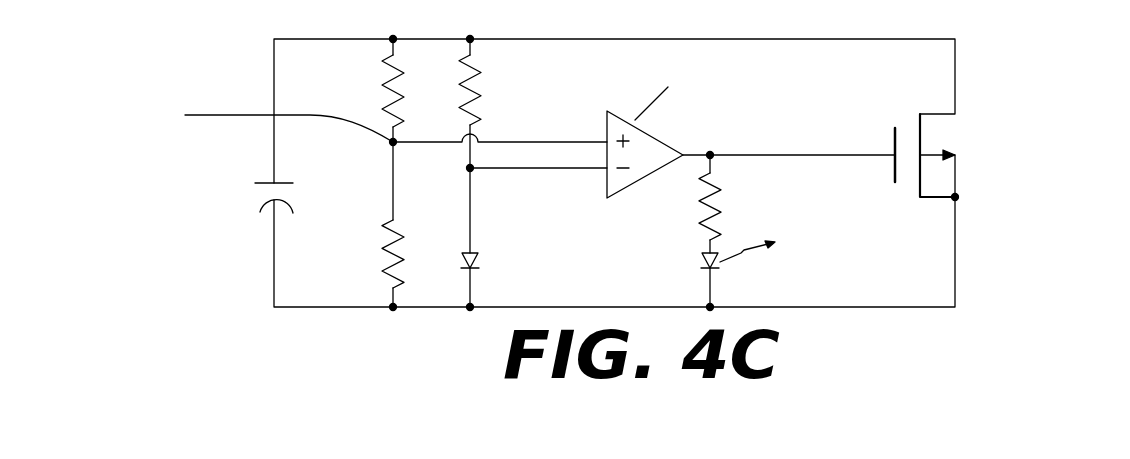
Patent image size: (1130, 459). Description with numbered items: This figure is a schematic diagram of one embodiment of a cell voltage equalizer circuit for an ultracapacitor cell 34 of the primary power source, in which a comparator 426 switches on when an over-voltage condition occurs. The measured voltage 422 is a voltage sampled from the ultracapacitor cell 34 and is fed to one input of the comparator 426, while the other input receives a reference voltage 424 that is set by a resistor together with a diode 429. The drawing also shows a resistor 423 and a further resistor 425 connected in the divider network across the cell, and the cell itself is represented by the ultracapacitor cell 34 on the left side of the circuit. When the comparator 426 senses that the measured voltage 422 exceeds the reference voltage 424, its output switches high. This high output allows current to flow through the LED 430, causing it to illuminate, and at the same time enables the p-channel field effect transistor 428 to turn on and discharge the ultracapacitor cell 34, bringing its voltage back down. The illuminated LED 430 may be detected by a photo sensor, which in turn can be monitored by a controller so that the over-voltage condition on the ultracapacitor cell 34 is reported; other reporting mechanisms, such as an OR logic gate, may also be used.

The measured voltage 422 is at (243, 113).
The ultracapacitor cell 34 is at (257, 210).
The resistor 423 is at (383, 92).
The resistor 425 is at (383, 264).
The reference voltage 424 is at (550, 222).
The diode 429 is at (477, 273).
The comparator 426 is at (655, 132).
The LED 430 is at (717, 270).
The p-channel field effect transistor 428 is at (965, 152).